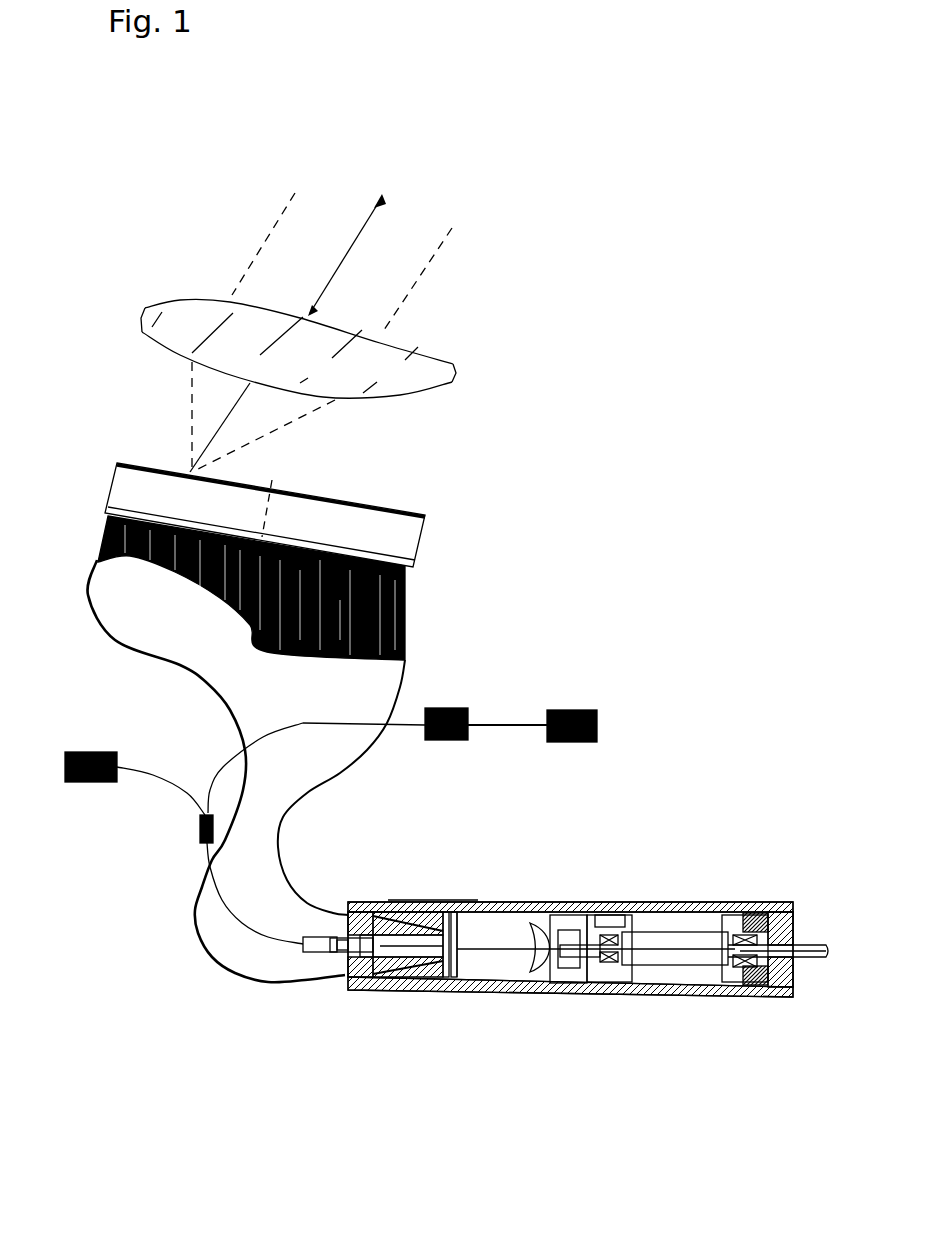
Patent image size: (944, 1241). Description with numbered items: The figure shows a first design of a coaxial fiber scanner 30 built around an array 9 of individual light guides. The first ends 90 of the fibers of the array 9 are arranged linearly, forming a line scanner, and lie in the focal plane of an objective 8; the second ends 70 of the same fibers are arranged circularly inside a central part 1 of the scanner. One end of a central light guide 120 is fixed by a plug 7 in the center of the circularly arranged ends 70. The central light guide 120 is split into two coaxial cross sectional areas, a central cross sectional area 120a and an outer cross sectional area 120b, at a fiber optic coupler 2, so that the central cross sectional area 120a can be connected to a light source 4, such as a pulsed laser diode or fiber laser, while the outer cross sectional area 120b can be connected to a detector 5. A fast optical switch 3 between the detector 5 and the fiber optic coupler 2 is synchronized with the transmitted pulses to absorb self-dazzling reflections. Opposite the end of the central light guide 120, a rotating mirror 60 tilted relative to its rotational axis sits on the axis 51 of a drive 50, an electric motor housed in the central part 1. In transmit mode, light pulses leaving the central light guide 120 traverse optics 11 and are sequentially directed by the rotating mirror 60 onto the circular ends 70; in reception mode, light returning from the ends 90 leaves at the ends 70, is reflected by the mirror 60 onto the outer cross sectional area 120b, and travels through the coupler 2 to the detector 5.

The central part 1 is at (460, 902).
The fiber optic coupler 2 is at (200, 828).
The fast optical switch 3 is at (452, 740).
The light source 4 is at (97, 752).
The detector 5 is at (565, 742).
The plug 7 is at (388, 942).
The objective 8 is at (425, 382).
The array of individual light guides 9 is at (405, 620).
The optics 11 is at (488, 952).
The fiber scanner 30 is at (657, 481).
The drive 50 is at (660, 940).
The axis 51 is at (813, 957).
The rotating mirror 60 is at (548, 925).
The second ends 70 is at (425, 958).
The first ends 90 is at (397, 535).
The central light guide 120 is at (240, 923).
The central cross sectional area 120a is at (153, 777).
The outer cross sectional area 120b is at (350, 722).